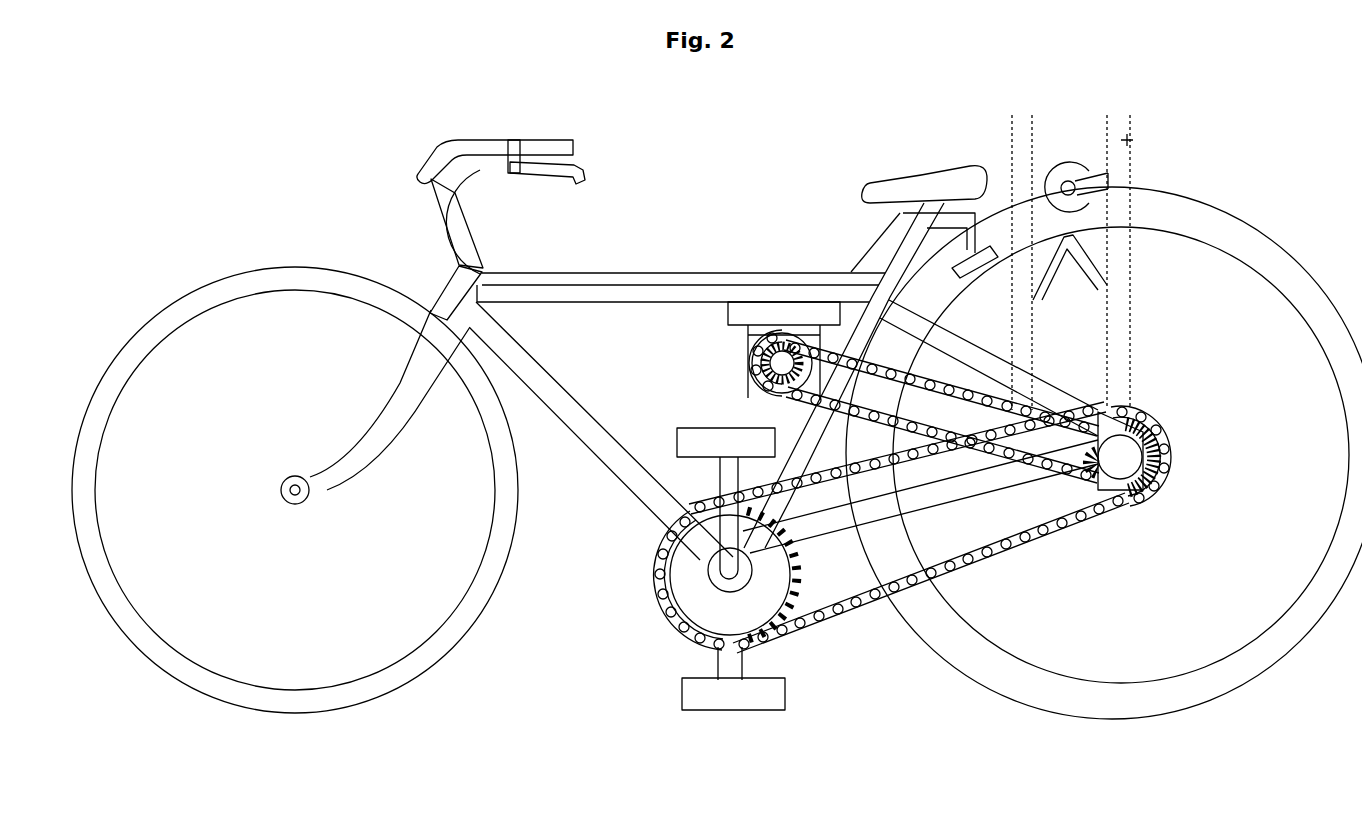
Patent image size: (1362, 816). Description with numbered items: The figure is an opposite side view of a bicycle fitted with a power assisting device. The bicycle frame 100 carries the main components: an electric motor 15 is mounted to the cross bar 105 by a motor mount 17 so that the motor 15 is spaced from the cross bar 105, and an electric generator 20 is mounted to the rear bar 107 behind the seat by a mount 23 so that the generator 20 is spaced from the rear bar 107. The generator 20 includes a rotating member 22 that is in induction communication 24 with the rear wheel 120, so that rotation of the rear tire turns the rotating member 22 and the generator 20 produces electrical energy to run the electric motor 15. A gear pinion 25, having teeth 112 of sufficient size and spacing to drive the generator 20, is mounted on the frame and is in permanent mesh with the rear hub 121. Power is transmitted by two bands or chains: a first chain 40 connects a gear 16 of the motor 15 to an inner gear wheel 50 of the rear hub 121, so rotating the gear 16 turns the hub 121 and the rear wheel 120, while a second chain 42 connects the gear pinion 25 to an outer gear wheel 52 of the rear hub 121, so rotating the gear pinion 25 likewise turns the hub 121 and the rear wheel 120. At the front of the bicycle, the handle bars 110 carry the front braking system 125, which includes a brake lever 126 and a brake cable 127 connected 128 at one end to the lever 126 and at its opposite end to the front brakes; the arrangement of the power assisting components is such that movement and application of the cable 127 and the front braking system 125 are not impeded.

The bicycle frame 100 is at (553, 373).
The cross bar 105 is at (606, 299).
The rear bar 107 is at (957, 333).
The handle bars 110 is at (455, 138).
The teeth 112 is at (659, 555).
The rear wheel 120 is at (1216, 232).
The rear hub 121 is at (1160, 436).
The front braking system 125 is at (485, 191).
The brake lever 126 is at (587, 171).
The brake cable 127 is at (447, 231).
The connection 128 is at (507, 167).
The electric motor 15 is at (764, 353).
The gear 16 is at (770, 376).
The motor mount 17 is at (740, 331).
The electric generator 20 is at (1062, 160).
The rotating member 22 is at (1112, 171).
The mount 23 is at (1127, 140).
The induction communication 24 is at (1110, 188).
The gear pinion 25 is at (661, 587).
The first band or chain 40 is at (923, 384).
The second band or chain 42 is at (856, 612).
The inner gear wheel 50 is at (1068, 475).
The outer gear wheel 52 is at (1168, 447).